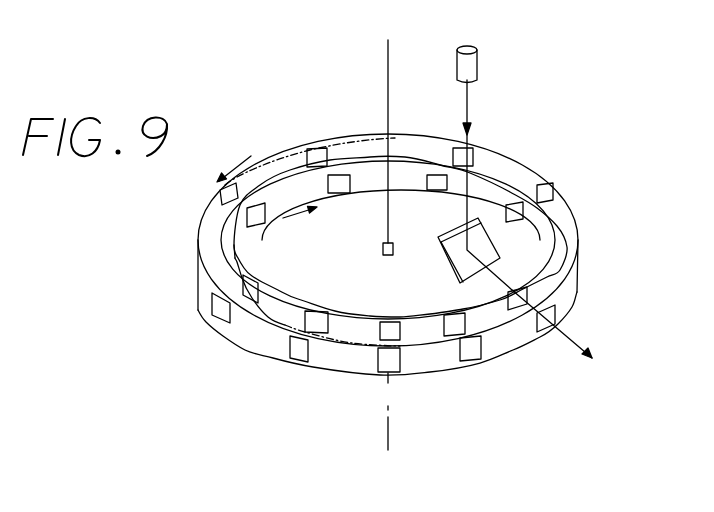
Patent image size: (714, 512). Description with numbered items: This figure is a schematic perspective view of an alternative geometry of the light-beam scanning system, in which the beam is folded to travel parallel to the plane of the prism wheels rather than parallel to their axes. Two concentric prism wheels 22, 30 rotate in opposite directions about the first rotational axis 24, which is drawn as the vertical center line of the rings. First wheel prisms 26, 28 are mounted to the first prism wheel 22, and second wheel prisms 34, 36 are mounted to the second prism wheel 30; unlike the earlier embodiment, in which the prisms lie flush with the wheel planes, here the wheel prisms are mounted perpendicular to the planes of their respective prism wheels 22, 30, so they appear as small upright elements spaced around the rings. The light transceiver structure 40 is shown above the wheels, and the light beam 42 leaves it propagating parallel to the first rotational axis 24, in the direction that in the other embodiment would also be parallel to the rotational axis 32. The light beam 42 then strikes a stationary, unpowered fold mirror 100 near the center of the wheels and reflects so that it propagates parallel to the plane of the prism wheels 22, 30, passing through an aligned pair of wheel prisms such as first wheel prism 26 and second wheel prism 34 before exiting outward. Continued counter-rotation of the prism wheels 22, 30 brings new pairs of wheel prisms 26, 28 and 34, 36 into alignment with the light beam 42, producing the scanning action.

The first prism wheel 22 is at (282, 198).
The first rotational axis 24 is at (385, 432).
The first wheel prism 26 is at (522, 290).
The first wheel prism 28 is at (524, 222).
The second prism wheel 30 is at (238, 335).
The rotational axis 32 is at (387, 114).
The second wheel prism 34 is at (555, 312).
The second wheel prism 36 is at (471, 355).
The light transceiver structure 40 is at (479, 58).
The light beam 42 is at (470, 95).
The fold mirror 100 is at (457, 276).